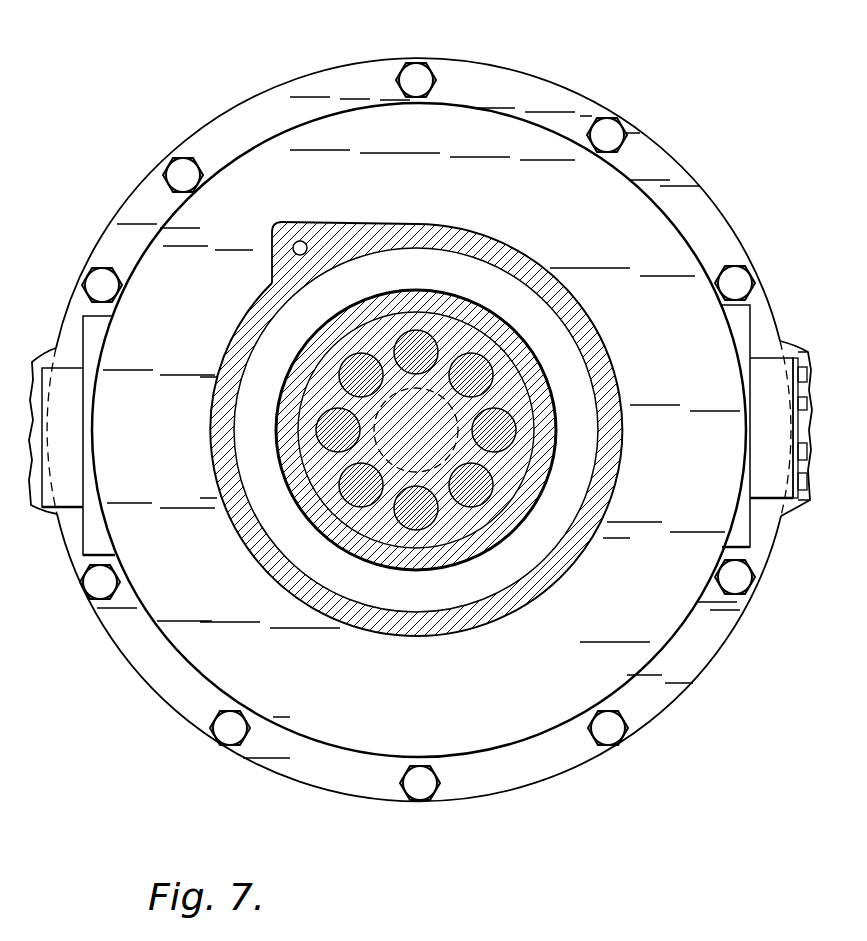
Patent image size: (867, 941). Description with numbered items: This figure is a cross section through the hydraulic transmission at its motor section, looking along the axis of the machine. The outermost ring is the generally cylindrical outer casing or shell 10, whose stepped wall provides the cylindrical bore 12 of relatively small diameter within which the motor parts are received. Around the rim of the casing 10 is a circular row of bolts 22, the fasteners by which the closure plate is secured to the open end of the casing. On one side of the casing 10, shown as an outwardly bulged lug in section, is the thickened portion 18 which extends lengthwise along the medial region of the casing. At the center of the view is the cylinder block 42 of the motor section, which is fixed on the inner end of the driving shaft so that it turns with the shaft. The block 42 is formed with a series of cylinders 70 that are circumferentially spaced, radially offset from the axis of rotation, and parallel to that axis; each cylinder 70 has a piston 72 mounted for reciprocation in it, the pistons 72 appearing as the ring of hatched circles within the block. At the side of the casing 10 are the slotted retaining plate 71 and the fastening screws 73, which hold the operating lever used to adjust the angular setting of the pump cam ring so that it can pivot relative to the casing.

The outer casing 10 is at (323, 120).
The cylindrical bore 12 is at (416, 438).
The thickened portion 18 is at (300, 224).
The bolts 22 is at (416, 70).
The cylinder block 42 is at (513, 385).
The cylinders 70 is at (330, 415).
The slotted retaining plate 71 is at (796, 500).
The pistons 72 is at (417, 342).
The fastening screws 73 is at (805, 360).